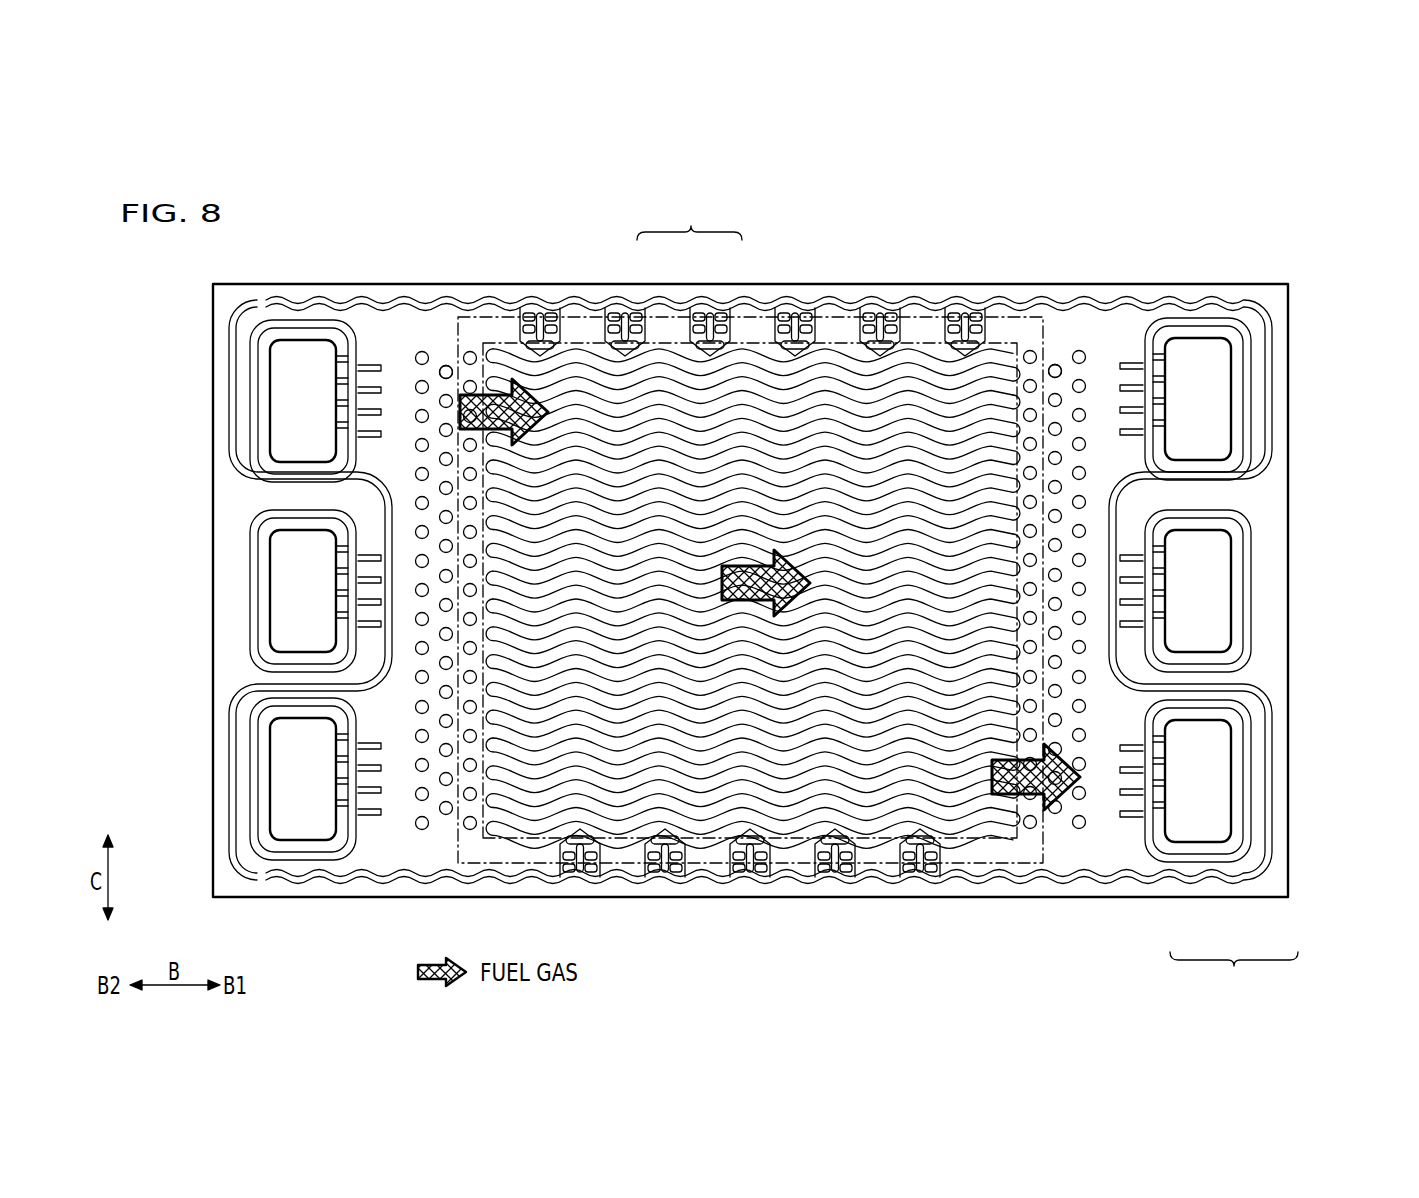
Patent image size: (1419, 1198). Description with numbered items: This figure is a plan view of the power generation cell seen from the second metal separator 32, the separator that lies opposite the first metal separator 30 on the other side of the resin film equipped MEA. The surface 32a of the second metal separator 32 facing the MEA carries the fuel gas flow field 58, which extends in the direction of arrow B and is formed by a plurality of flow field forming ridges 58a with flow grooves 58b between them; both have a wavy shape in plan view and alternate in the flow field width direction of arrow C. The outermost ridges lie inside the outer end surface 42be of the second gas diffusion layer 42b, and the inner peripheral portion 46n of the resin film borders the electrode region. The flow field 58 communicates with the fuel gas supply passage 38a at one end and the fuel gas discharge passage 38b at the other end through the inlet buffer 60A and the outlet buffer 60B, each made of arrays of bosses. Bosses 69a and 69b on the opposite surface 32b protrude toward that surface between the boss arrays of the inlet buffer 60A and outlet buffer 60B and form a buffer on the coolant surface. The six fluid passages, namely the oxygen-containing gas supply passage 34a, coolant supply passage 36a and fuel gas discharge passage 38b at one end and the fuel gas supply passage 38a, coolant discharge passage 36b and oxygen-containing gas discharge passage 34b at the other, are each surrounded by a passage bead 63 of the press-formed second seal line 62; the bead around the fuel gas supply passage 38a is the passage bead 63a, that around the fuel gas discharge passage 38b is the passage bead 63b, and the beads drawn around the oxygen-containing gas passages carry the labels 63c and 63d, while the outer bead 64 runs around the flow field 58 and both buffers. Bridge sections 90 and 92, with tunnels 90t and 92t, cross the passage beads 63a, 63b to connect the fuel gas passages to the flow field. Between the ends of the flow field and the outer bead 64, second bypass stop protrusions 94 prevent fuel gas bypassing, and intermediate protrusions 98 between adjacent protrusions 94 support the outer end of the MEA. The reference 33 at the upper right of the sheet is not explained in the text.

The first metal separator 30 is at (623, 282).
The second metal separator 32 is at (602, 282).
The surface 32a is at (492, 300).
The surface 32b is at (558, 300).
The separator body 33 is at (1264, 210).
The oxygen-containing gas supply passage 34a is at (1208, 384).
The oxygen-containing gas discharge passage 34b is at (283, 762).
The coolant supply passage 36a is at (1215, 574).
The coolant discharge passage 36b is at (285, 574).
The fuel gas supply passage 38a is at (283, 372).
The fuel gas discharge passage 38b is at (1212, 770).
The second gas diffusion layer 42b is at (468, 312).
The outer end surface 42be is at (522, 318).
The inner peripheral portion 46n is at (990, 842).
The fuel gas flow field 58 is at (689, 218).
The flow field forming ridges 58a is at (683, 385).
The flow grooves 58b is at (712, 375).
The inlet buffer 60A is at (466, 650).
The outlet buffer 60B is at (1034, 678).
The second seal line 62 is at (1234, 969).
The passage beads 63 is at (252, 527).
The passage bead 63a is at (254, 380).
The passage bead 63b is at (1225, 858).
The passage bead of oxygen-containing gas supply passage 63c is at (1250, 368).
The passage bead of oxygen-containing gas discharge passage 63d is at (253, 806).
The outer bead 64 is at (1186, 882).
The bosses 69a is at (444, 364).
The bosses 69b is at (1054, 364).
The bridge section 90 is at (380, 334).
The tunnels 90t is at (374, 368).
The bridge section 92 is at (1120, 828).
The tunnels 92t is at (1155, 815).
The second bypass stop protrusions 94 is at (778, 320).
The intermediate protrusions 98 is at (897, 320).